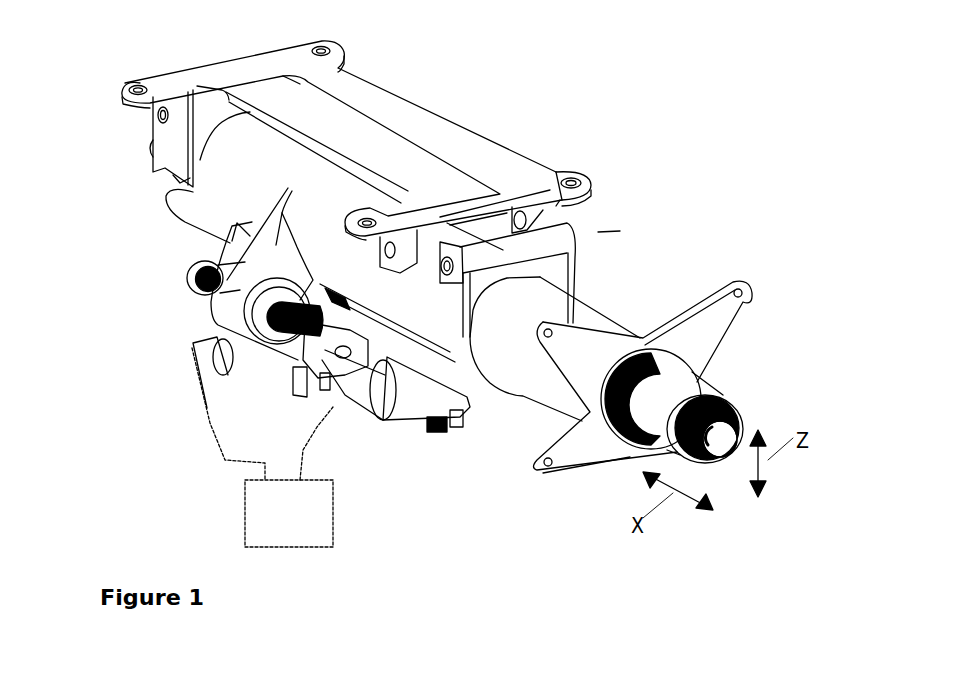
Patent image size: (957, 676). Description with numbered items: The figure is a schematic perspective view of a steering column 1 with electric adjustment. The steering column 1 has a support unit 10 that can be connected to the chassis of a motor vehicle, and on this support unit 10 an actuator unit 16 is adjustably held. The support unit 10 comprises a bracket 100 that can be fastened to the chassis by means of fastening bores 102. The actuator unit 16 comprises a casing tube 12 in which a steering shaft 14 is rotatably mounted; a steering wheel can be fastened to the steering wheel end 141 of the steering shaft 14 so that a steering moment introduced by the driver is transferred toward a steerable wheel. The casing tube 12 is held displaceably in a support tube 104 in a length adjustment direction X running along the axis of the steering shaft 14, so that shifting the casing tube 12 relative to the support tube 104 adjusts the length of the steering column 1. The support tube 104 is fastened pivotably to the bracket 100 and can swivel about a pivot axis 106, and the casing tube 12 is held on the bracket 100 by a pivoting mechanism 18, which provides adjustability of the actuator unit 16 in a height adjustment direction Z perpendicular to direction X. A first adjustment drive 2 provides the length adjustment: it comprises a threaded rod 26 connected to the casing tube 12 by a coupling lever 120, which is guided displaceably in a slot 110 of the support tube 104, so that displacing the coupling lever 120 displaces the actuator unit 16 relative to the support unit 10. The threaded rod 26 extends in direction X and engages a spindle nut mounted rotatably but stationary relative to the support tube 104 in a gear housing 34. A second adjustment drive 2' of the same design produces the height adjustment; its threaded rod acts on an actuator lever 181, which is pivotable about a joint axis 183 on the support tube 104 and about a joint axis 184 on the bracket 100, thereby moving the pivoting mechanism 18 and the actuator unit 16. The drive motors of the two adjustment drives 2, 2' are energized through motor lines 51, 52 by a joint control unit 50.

The steering column 1 is at (570, 95).
The first adjustment drive 2 is at (230, 386).
The second adjustment drive 2' is at (404, 461).
The support unit 10 is at (427, 118).
The casing tube 12 is at (553, 303).
The steering shaft 14 is at (685, 393).
The actuator unit 16 is at (656, 271).
The pivoting mechanism 18 is at (583, 223).
The threaded rod 26 is at (187, 284).
The gear housing 34 is at (240, 308).
The control unit 50 is at (266, 502).
The motor line 51 is at (210, 424).
The motor line 52 is at (307, 450).
The bracket 100 is at (323, 117).
The fastening bores 102 is at (577, 173).
The support tube 104 is at (220, 191).
The pivot axis 106 is at (338, 79).
The slot 110 is at (441, 398).
The coupling lever 120 is at (366, 395).
The steering wheel end 141 is at (740, 403).
The actuator lever 181 is at (592, 176).
The joint axis 183 is at (622, 230).
The joint axis 184 is at (375, 258).